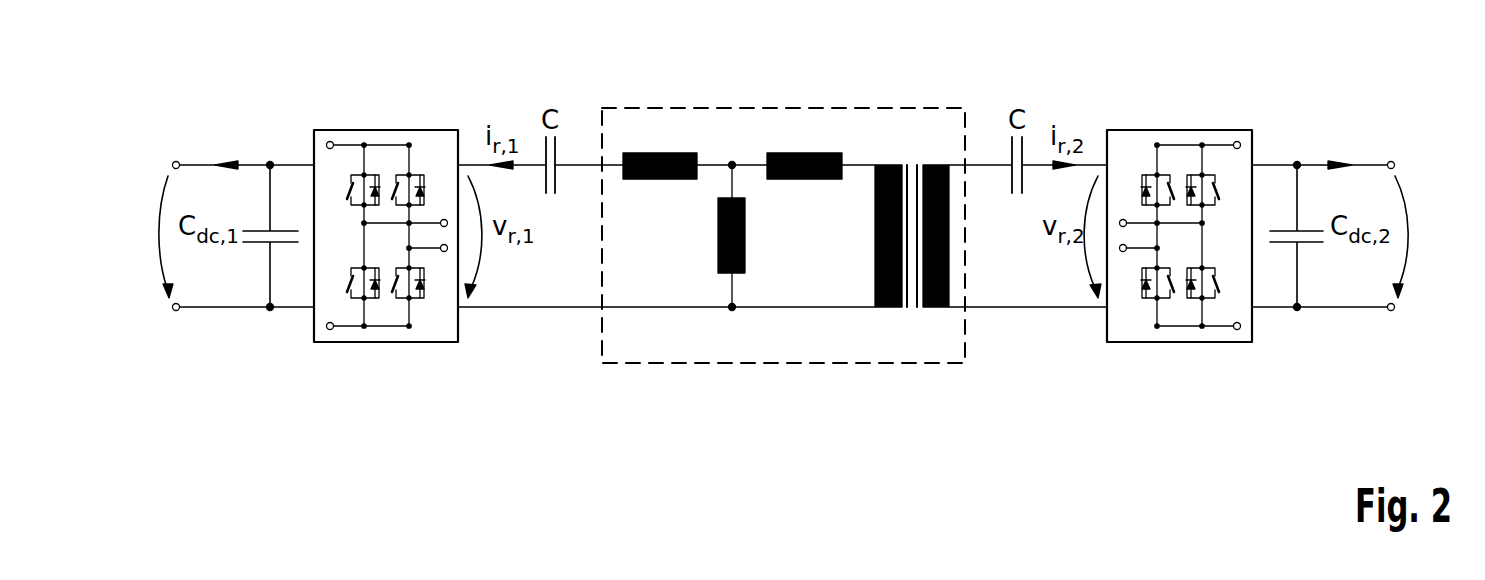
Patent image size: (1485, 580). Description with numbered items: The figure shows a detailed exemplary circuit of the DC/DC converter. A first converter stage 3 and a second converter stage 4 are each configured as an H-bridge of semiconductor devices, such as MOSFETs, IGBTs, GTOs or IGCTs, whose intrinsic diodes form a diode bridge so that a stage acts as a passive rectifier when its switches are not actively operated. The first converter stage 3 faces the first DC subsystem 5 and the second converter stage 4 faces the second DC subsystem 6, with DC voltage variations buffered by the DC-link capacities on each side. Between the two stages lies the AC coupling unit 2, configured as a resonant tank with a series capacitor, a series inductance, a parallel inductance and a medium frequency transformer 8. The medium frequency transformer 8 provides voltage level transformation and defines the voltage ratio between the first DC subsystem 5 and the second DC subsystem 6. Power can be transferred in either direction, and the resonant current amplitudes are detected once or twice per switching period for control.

The AC coupling unit 2 is at (783, 275).
The first converter stage 3 is at (386, 219).
The second converter stage 4 is at (1179, 219).
The first DC subsystem 5 is at (176, 96).
The second DC subsystem 6 is at (1387, 96).
The medium frequency transformer 8 is at (912, 330).